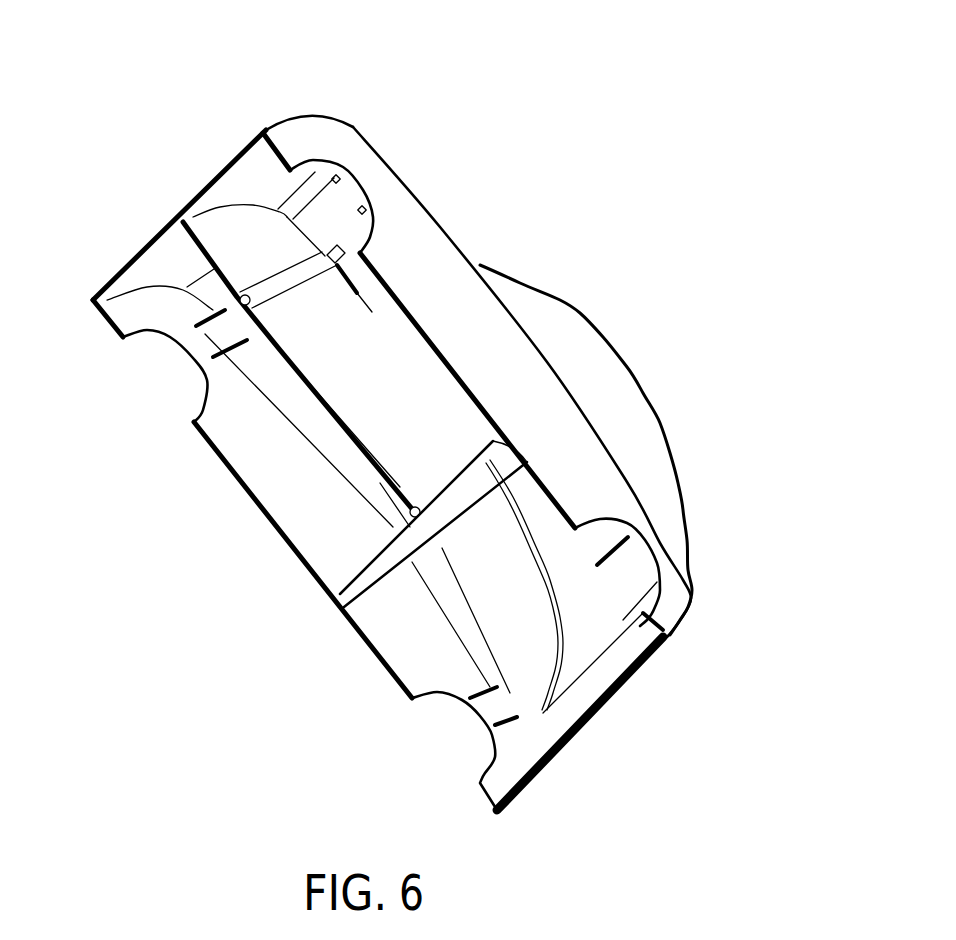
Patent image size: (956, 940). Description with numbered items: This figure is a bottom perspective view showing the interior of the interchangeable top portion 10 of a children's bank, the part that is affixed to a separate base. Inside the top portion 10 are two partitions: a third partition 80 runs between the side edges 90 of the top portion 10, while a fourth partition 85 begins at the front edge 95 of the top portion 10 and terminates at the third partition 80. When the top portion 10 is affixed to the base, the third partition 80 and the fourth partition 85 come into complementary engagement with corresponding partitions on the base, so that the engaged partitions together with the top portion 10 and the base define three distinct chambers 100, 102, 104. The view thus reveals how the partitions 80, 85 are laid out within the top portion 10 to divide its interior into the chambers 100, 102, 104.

The interchangeable top portion 10 is at (638, 307).
The third partition 80 is at (392, 552).
The fourth partition 85 is at (237, 252).
The side edges 90 is at (537, 422).
The front edge 95 is at (236, 152).
The chamber 100 is at (373, 383).
The chamber 102 is at (292, 450).
The chamber 104 is at (540, 612).